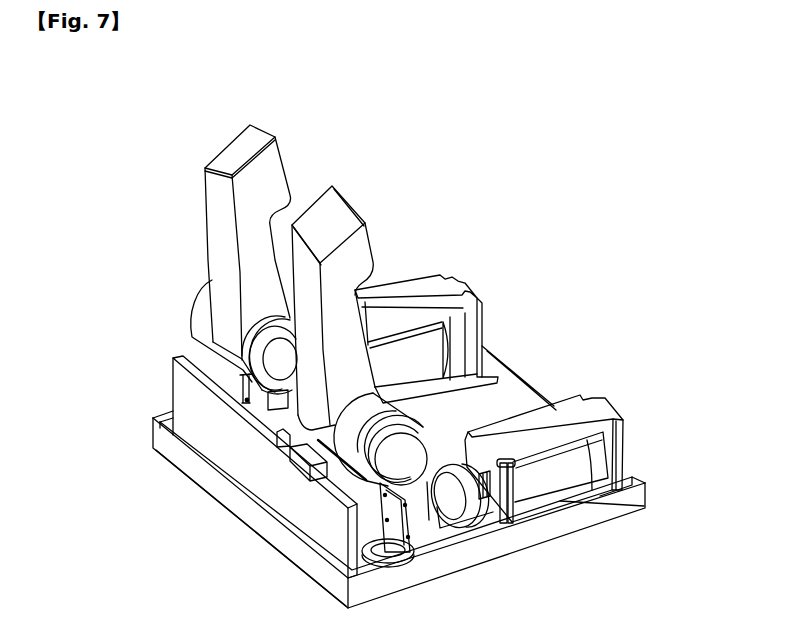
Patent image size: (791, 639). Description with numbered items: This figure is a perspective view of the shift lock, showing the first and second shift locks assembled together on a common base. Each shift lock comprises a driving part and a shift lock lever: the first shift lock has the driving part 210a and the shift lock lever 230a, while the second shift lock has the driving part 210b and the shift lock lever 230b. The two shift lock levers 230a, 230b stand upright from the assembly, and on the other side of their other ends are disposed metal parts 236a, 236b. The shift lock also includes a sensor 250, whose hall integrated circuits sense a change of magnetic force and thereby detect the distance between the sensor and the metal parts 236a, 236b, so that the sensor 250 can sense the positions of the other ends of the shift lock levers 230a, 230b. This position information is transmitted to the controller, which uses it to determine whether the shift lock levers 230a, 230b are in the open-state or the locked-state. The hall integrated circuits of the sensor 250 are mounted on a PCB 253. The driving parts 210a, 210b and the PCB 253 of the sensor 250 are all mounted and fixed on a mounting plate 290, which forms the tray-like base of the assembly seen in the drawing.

The driving part 210a is at (468, 285).
The driving part 210b is at (608, 402).
The shift lock lever 230a is at (218, 150).
The shift lock lever 230b is at (353, 203).
The metal part 236a is at (243, 374).
The metal part 236b is at (400, 520).
The sensor 250 is at (262, 478).
The PCB 253 is at (307, 520).
The mounting plate 290 is at (645, 495).